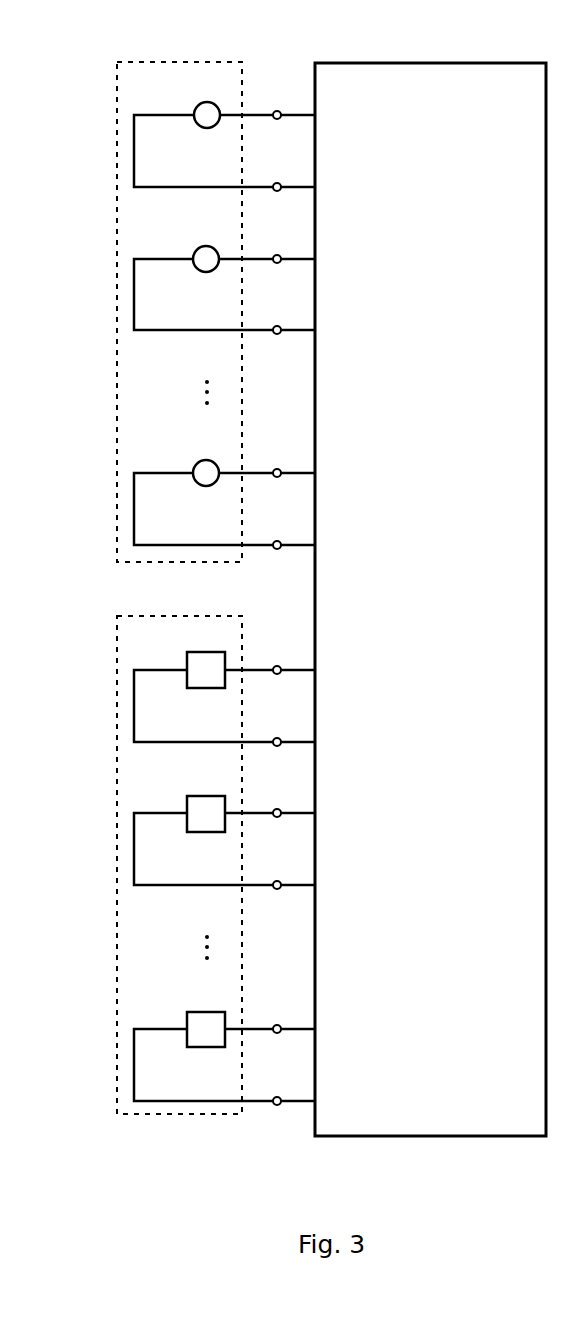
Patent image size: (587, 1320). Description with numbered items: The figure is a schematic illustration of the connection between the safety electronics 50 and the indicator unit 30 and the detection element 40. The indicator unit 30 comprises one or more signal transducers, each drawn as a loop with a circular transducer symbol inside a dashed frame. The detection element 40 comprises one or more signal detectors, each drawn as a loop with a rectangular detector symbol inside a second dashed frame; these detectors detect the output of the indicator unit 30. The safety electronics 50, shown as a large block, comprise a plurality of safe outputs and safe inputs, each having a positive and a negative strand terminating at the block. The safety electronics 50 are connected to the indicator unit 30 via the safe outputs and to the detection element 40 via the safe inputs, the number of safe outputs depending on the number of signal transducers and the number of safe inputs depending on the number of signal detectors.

The indicator unit 30 is at (93, 92).
The detection element 40 is at (93, 642).
The safety electronics 50 is at (430, 599).